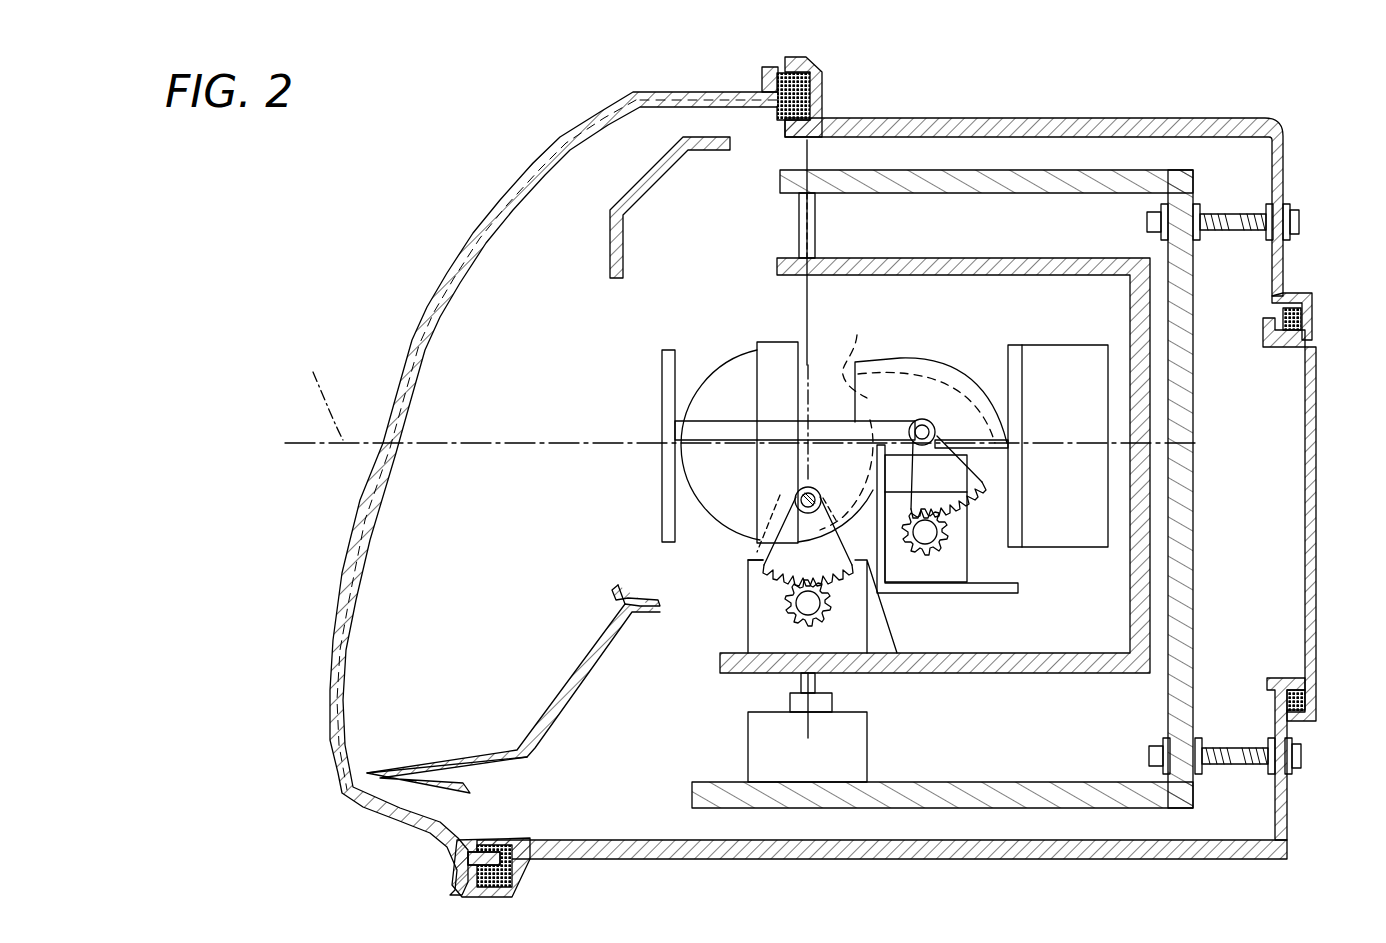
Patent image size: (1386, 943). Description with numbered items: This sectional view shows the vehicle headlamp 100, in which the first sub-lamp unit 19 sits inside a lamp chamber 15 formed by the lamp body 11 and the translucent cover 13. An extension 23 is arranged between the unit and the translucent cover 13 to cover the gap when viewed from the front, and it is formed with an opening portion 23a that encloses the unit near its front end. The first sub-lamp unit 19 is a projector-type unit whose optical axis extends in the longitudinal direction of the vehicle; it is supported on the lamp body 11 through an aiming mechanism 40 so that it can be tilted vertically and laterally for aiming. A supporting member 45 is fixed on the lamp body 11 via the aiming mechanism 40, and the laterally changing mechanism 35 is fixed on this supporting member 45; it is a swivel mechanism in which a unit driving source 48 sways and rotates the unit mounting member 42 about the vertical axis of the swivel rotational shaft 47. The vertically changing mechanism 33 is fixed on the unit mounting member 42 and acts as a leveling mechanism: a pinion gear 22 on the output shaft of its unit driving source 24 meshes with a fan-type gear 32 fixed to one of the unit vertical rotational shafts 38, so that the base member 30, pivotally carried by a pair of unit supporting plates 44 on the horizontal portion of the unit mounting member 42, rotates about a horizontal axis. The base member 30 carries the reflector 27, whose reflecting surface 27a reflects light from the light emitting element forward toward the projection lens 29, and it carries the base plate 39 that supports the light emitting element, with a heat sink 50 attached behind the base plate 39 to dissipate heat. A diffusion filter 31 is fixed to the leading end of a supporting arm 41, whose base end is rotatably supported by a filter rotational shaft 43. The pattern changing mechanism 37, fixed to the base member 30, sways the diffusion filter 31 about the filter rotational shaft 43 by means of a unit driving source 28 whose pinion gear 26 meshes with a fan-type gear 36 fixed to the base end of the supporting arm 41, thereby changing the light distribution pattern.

The vehicle headlamp 100 is at (1272, 108).
The lamp body 11 is at (940, 118).
The translucent cover 13 is at (545, 150).
The first sub-lamp unit 19 is at (540, 238).
The lamp chamber 15 is at (724, 214).
The opening portion 23a is at (615, 283).
The supporting member 45 is at (1198, 411).
The unit mounting member 42 is at (1044, 252).
The swivel rotational shaft 47 is at (812, 228).
The aiming mechanism 40 is at (1228, 203).
The heat sink 50 is at (1113, 498).
The diffusion filter 31 is at (665, 378).
The base member 30 is at (745, 478).
The projection lens 29 is at (727, 366).
The supporting arm 41 is at (744, 430).
The reflecting surface 27a is at (907, 416).
The reflector 27 is at (965, 372).
The filter rotational shaft 43 is at (932, 424).
The base plate 39 is at (966, 487).
The unit vertical rotational shaft 38 is at (805, 490).
The unit driving source 24 is at (740, 568).
The unit supporting plate 44 is at (760, 556).
The vertically changing mechanism 33 is at (757, 560).
The fan-type gear 32 is at (873, 592).
The pinion gear 22 is at (792, 612).
The unit driving source 28 is at (912, 560).
The pinion gear 26 is at (940, 560).
The fan-type gear 36 is at (960, 535).
The pattern changing mechanism 37 is at (1024, 568).
The extension 23 is at (565, 665).
The laterally changing mechanism 35 is at (750, 697).
The unit driving source 48 is at (852, 752).